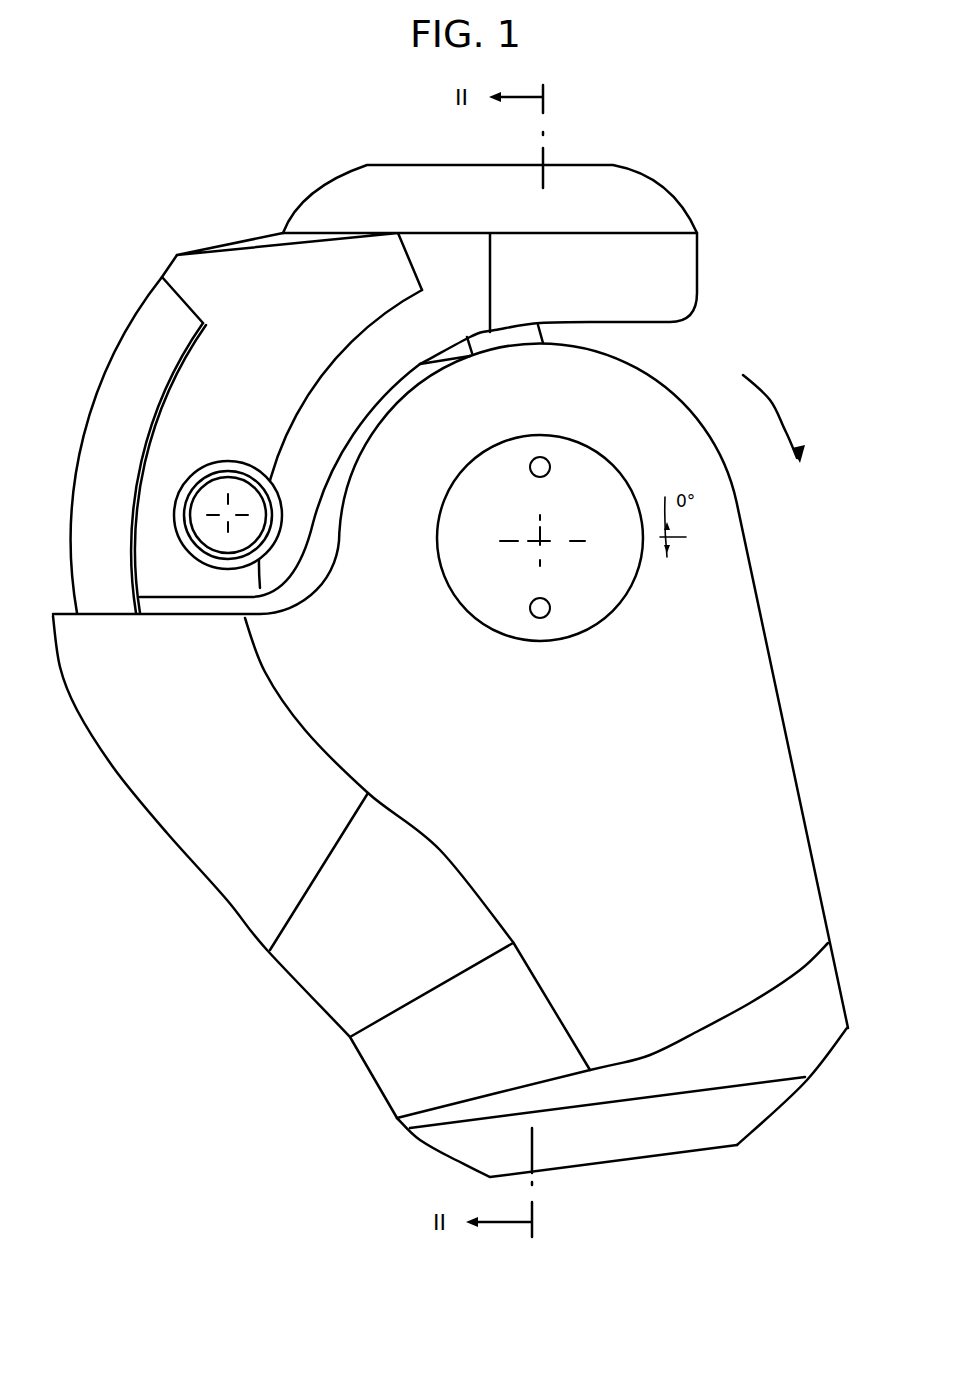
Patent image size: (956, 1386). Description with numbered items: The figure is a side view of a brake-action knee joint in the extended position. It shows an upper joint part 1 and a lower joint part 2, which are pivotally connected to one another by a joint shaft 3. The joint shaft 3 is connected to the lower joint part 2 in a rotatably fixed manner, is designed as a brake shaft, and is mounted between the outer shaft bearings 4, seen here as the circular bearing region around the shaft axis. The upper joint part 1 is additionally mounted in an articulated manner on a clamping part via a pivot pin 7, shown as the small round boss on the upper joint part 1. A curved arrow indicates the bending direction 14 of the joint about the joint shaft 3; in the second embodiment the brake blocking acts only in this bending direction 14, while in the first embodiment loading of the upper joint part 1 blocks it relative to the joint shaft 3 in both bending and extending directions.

The upper joint part 1 is at (670, 278).
The lower joint part 2 is at (813, 1005).
The joint shaft 3 is at (533, 543).
The outer shaft bearings 4 is at (593, 598).
The pivot pin 7 is at (229, 508).
The bending direction 14 is at (777, 419).